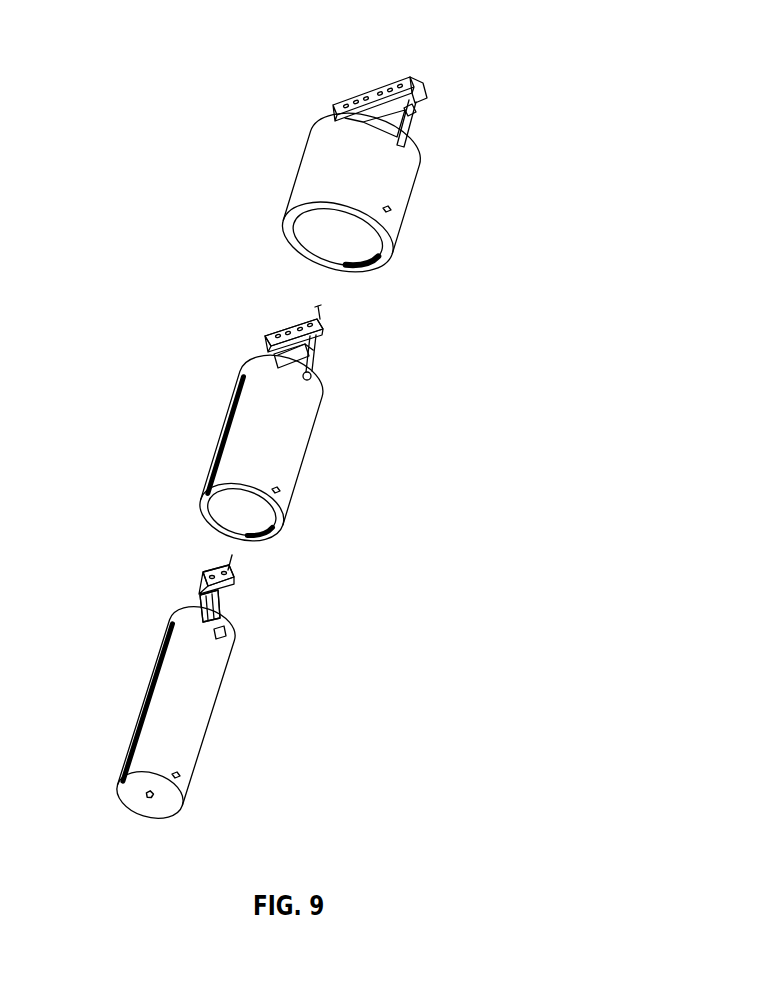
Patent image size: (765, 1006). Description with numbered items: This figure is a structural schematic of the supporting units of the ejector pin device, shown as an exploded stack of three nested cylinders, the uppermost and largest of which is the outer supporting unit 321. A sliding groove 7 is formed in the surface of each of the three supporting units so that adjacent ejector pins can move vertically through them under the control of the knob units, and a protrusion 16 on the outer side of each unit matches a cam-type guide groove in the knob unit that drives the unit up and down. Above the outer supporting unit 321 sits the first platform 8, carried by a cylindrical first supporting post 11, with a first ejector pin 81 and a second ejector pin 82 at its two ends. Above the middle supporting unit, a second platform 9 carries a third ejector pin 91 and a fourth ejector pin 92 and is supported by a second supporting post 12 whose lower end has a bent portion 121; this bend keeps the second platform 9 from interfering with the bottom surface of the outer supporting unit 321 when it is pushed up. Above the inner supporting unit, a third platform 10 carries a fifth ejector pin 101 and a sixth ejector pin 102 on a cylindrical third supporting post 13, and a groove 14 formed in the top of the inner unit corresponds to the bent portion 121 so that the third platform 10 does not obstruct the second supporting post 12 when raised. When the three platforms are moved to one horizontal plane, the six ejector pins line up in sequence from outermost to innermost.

The sliding groove 7 is at (380, 253).
The first platform 8 is at (420, 96).
The second platform 9 is at (325, 342).
The third platform 10 is at (233, 581).
The first supporting post 11 is at (407, 132).
The second supporting post 12 is at (266, 360).
The third supporting post 13 is at (199, 606).
The groove 14 is at (227, 634).
The protrusion 16 is at (389, 212).
The first ejector pin 81 is at (360, 92).
The second ejector pin 82 is at (412, 70).
The third ejector pin 91 is at (287, 325).
The fourth ejector pin 92 is at (318, 308).
The fifth ejector pin 101 is at (208, 564).
The sixth ejector pin 102 is at (232, 555).
The bent portion 121 is at (312, 376).
The outer supporting unit 321 is at (385, 177).